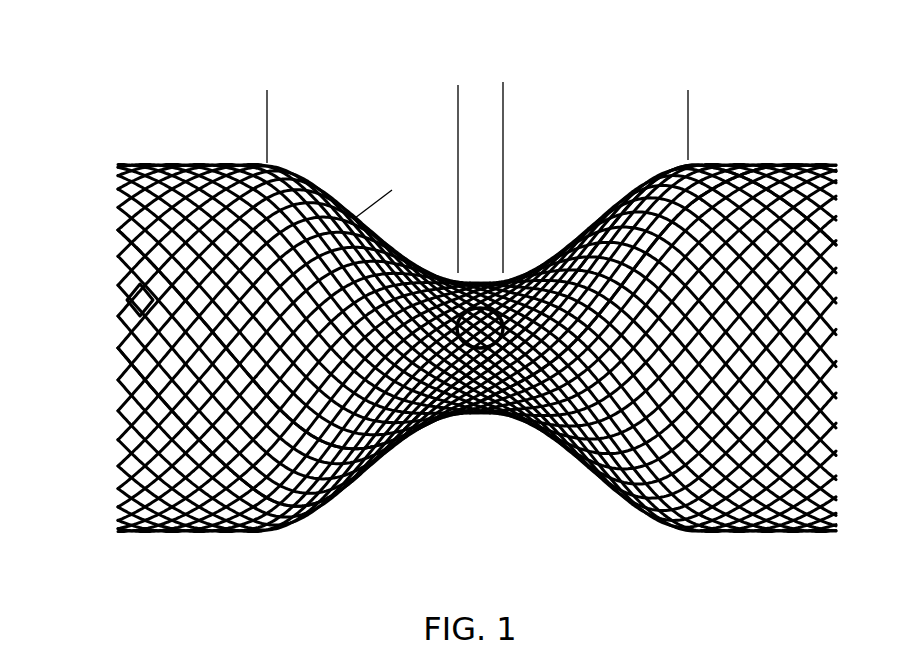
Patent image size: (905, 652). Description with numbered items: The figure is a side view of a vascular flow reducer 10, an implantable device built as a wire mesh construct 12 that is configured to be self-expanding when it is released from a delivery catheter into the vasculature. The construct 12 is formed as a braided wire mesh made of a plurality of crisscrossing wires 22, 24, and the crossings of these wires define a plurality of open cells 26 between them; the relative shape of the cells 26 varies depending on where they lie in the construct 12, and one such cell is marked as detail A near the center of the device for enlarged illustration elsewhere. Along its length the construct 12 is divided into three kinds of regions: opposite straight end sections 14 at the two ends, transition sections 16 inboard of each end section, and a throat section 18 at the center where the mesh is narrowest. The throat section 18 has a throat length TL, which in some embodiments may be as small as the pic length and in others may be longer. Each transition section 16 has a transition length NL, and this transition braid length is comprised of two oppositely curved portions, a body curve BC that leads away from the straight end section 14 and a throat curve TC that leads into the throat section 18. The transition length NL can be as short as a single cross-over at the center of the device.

The vascular flow reducer 10 is at (303, 72).
The wire mesh construct 12 is at (633, 512).
The straight end section 14 is at (163, 158).
The transition section 16 is at (582, 462).
The throat section 18 is at (470, 423).
The wire 22 is at (120, 247).
The wire 24 is at (120, 230).
The open cell 26 is at (126, 303).
The detail A is at (483, 354).
The transition length NL is at (682, 106).
The throat length TL is at (425, 163).
The body curve BC is at (272, 160).
The throat curve TC is at (371, 205).